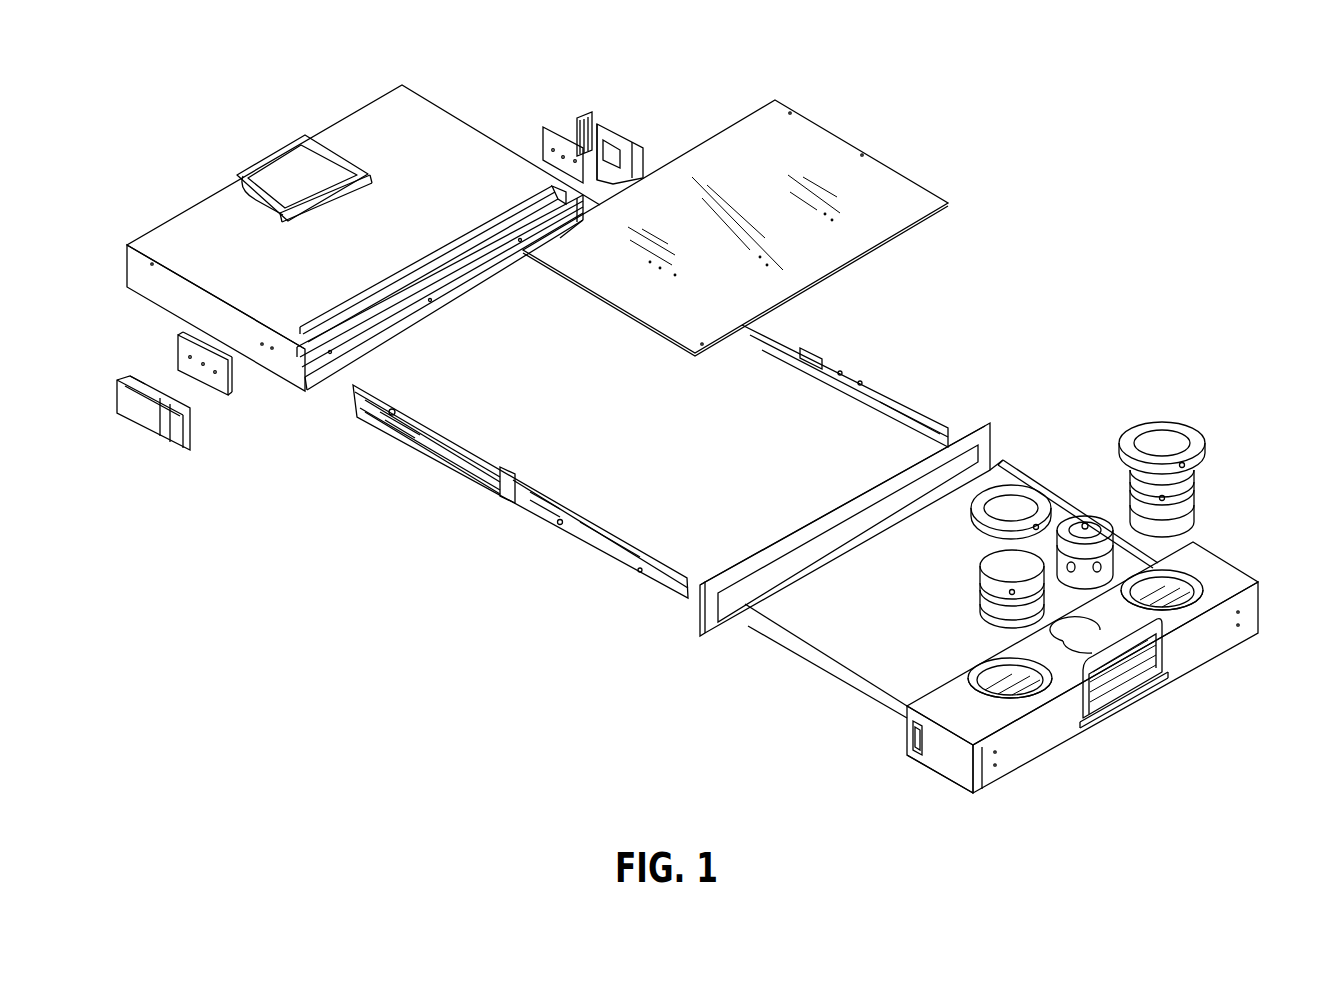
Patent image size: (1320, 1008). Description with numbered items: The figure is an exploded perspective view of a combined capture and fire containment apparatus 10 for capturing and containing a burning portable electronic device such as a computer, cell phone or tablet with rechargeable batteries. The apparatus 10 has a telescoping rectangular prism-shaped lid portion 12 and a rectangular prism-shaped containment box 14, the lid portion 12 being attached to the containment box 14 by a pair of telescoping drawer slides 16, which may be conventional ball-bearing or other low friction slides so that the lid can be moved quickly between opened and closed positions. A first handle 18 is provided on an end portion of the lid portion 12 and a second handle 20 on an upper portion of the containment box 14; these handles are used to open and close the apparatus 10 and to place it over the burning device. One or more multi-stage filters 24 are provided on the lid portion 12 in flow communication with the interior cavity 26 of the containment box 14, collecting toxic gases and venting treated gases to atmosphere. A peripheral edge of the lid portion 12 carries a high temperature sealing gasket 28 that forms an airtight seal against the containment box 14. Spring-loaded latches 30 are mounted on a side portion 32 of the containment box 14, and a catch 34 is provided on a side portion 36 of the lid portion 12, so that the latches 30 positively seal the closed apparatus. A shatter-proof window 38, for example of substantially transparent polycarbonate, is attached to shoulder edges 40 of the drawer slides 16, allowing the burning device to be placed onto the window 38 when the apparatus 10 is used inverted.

The combined capture and fire containment apparatus 10 is at (292, 493).
The lid portion 12 is at (1043, 735).
The containment box 14 is at (291, 278).
The telescoping drawer slides 16 is at (472, 478).
The first handle 18 is at (1150, 682).
The second handle 20 is at (273, 148).
The multi-stage filters 24 is at (1195, 495).
The interior cavity 26 is at (480, 277).
The high temperature sealing gasket 28 is at (712, 635).
The spring-loaded latches 30 is at (610, 128).
The side portion 32 is at (140, 272).
The catch 34 is at (905, 735).
The side portion 36 is at (960, 758).
The shatter-proof window 38 is at (880, 190).
The shoulder edges 40 is at (450, 428).